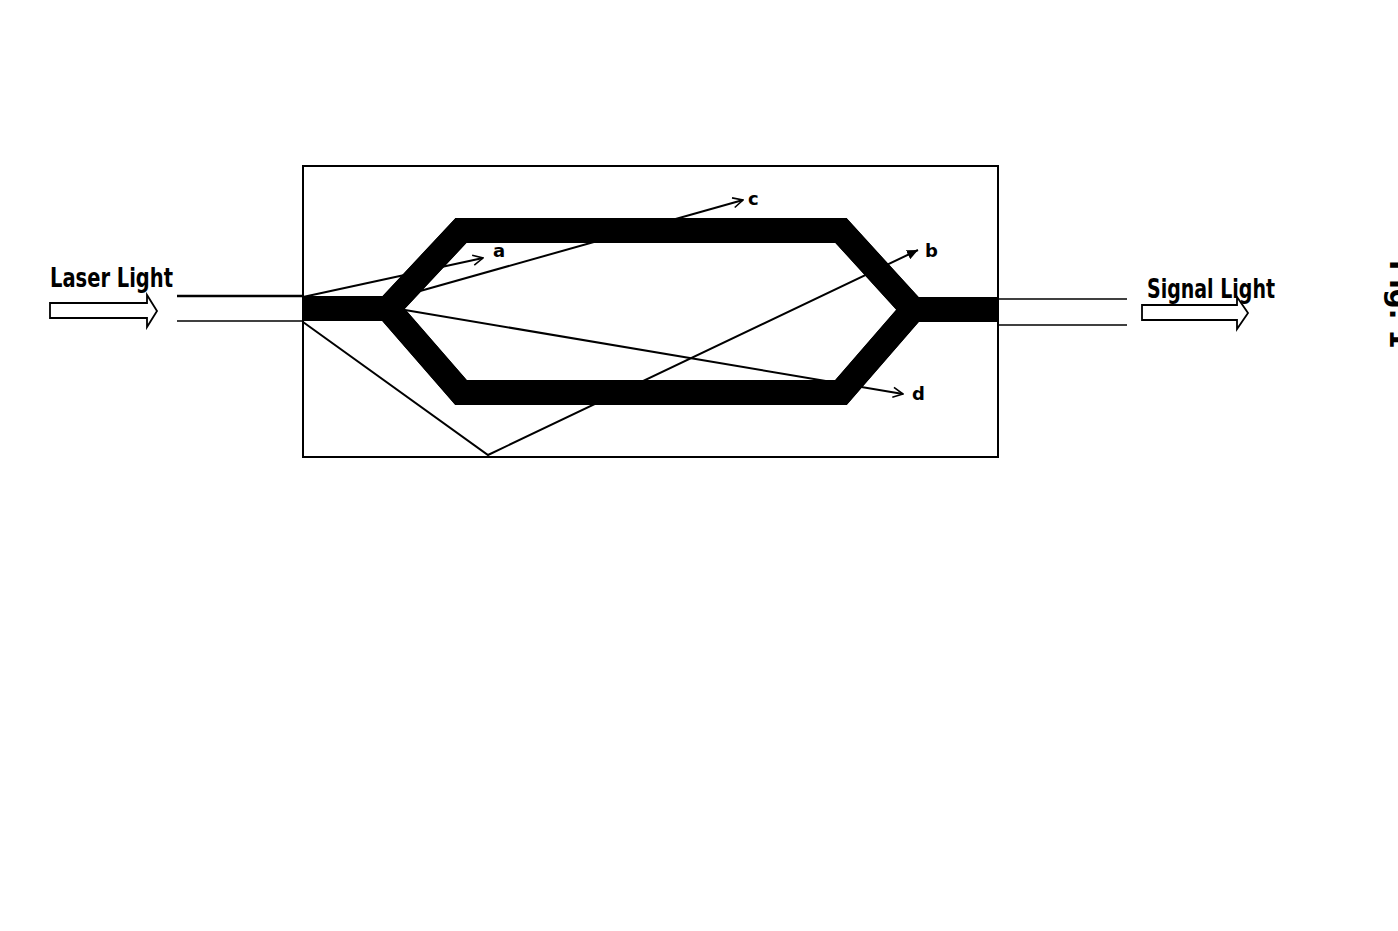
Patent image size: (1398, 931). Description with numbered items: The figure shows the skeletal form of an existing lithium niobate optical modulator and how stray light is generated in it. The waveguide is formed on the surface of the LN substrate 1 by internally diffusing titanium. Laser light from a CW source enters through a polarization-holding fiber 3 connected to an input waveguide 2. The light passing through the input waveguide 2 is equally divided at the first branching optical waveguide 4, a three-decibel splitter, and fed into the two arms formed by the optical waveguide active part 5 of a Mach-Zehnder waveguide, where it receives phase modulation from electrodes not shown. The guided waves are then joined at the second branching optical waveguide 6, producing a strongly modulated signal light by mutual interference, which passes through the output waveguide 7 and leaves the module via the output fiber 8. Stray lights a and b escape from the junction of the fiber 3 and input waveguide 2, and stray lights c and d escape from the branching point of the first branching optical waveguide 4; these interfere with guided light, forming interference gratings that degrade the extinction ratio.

The LN substrate 1 is at (902, 423).
The input waveguide 2 is at (335, 320).
The fiber 3 is at (240, 295).
The first branching optical waveguide 4 is at (428, 246).
The optical waveguide active part 5 is at (650, 380).
The second branching optical waveguide 6 is at (874, 250).
The output waveguide 7 is at (973, 297).
The output fiber 8 is at (1075, 325).